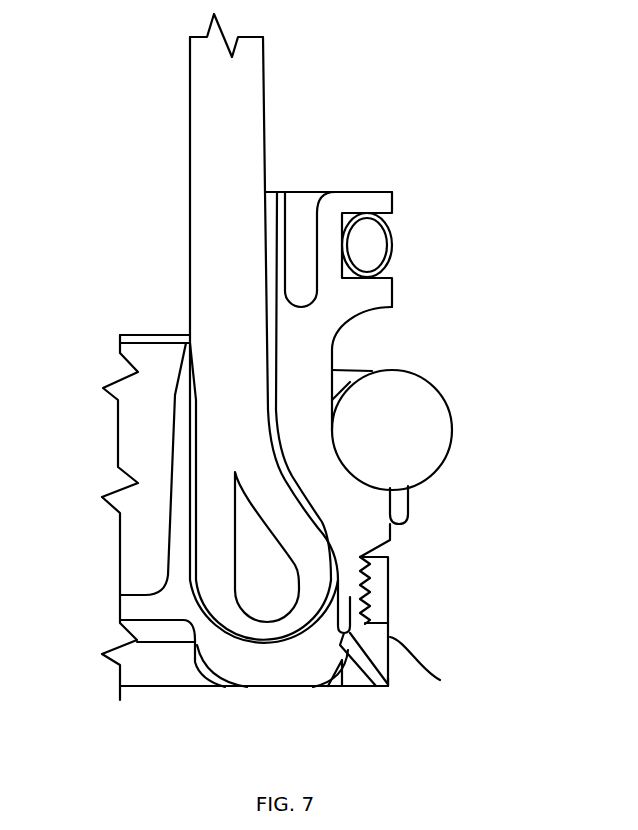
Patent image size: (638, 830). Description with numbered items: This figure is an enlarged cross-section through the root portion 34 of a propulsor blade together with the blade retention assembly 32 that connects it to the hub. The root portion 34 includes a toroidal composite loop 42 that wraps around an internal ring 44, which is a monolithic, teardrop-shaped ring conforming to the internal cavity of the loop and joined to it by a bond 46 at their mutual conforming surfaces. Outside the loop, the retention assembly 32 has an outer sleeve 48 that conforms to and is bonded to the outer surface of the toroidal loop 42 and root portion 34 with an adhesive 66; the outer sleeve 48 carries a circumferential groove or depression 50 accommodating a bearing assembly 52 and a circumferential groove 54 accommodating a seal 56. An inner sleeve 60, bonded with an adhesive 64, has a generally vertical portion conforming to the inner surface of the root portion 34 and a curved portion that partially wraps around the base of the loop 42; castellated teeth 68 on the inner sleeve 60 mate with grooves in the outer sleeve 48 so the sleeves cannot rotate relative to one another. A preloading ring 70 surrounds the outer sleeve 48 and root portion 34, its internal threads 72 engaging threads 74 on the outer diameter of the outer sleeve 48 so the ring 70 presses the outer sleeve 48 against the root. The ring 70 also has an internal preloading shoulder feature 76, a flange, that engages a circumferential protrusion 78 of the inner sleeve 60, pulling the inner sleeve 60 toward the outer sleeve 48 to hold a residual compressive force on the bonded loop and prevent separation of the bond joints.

The blade retention assembly 32 is at (524, 522).
The root portion 34 is at (232, 382).
The toroidal composite loop 42 is at (263, 637).
The internal ring 44 is at (257, 568).
The bond 46 is at (235, 525).
The outer sleeve 48 is at (333, 350).
The circumferential groove or depression 50 is at (348, 463).
The bearing assembly 52 is at (440, 433).
The circumferential groove 54 is at (353, 214).
The seal 56 is at (396, 232).
The inner sleeve 60 is at (296, 688).
The adhesive 64 is at (188, 340).
The adhesive 66 is at (267, 185).
The castellated teeth 68 is at (388, 686).
The preloading ring 70 is at (435, 668).
The internal threads 72 is at (388, 623).
The threads 74 is at (367, 590).
The preloading shoulder feature 76 is at (362, 687).
The circumferential protrusion 78 is at (360, 645).